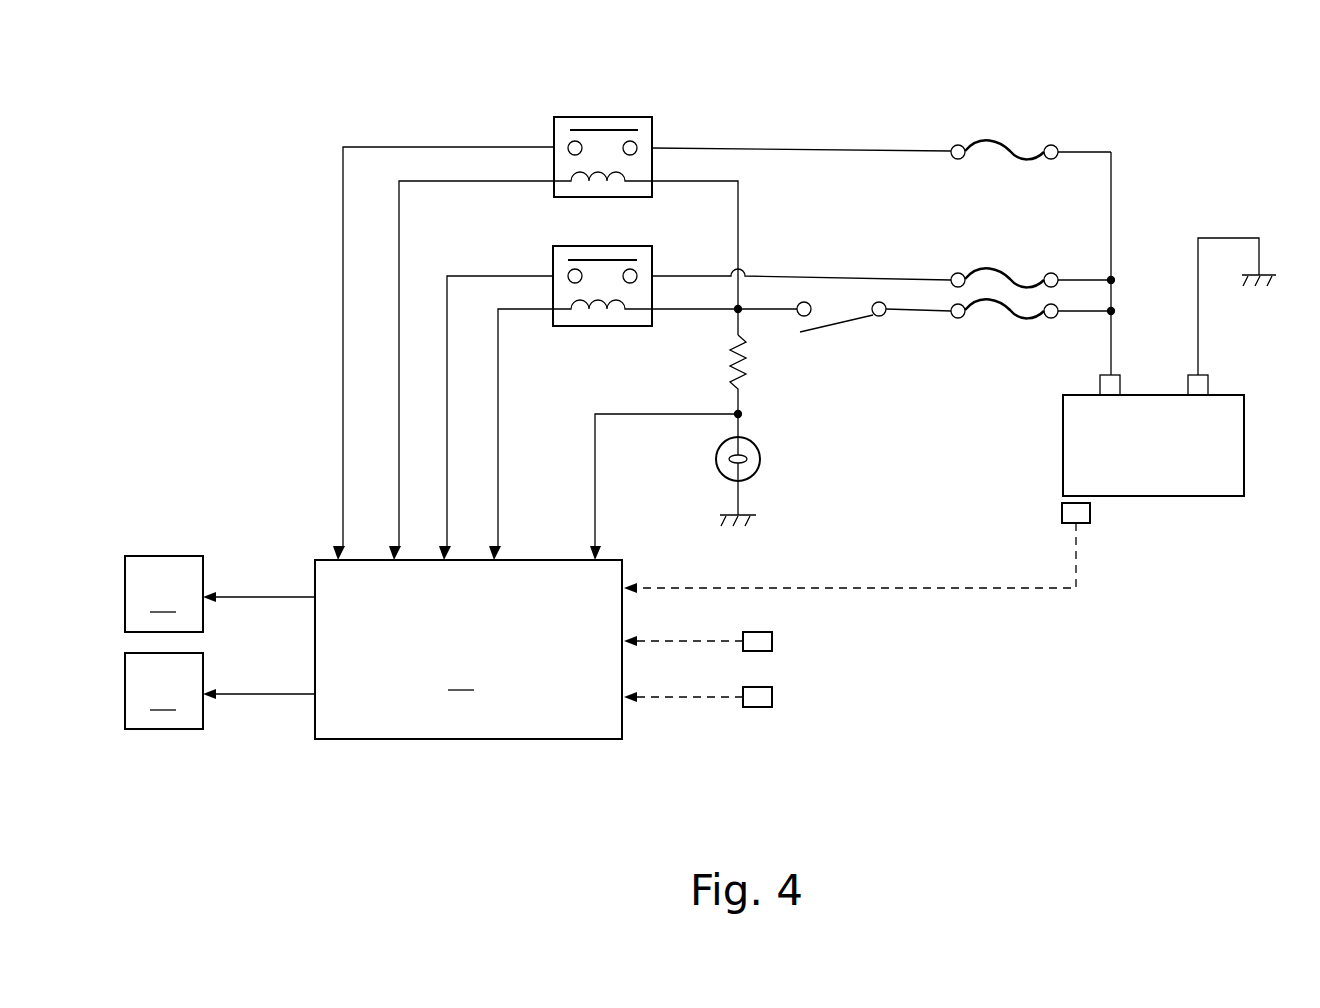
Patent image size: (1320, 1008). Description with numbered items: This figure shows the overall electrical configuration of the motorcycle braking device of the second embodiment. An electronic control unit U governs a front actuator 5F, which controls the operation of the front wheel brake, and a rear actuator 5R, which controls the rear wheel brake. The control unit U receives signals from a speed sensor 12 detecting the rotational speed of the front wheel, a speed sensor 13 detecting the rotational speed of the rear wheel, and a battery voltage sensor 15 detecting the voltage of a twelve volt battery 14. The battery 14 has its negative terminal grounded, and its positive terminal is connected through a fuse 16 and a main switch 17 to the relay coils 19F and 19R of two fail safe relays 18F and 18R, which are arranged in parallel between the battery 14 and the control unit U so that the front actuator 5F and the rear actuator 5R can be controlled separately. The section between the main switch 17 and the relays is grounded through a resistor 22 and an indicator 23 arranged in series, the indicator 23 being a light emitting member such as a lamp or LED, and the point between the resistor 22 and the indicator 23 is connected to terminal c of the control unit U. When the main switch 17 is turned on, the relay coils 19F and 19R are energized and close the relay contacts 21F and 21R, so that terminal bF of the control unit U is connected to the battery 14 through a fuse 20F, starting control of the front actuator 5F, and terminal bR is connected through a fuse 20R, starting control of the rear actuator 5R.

The front actuator 5F is at (220, 594).
The rear actuator 5R is at (220, 691).
The electronic control unit U is at (468, 649).
The speed sensor 12 is at (772, 641).
The speed sensor 13 is at (772, 697).
The battery 14 is at (1170, 461).
The battery voltage sensor 15 is at (1090, 513).
The fuse 16 is at (1017, 318).
The main switch 17 is at (843, 324).
The fail safe relay 18F is at (623, 148).
The fail safe relay 18R is at (635, 292).
The relay coil 19F is at (584, 200).
The relay coil 19R is at (592, 320).
The fuse 20F is at (1010, 140).
The fuse 20R is at (1010, 270).
The relay contact 21F is at (606, 128).
The relay contact 21R is at (611, 258).
The resistor 22 is at (745, 366).
The indicator 23 is at (760, 463).